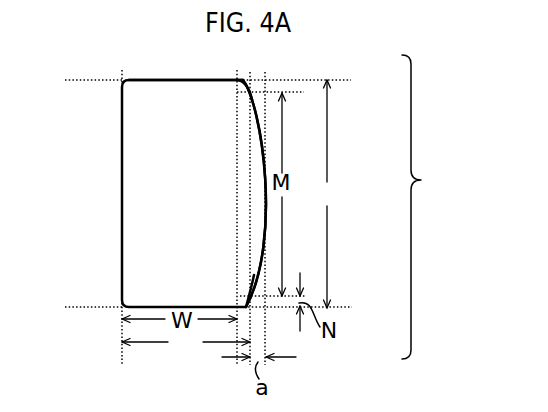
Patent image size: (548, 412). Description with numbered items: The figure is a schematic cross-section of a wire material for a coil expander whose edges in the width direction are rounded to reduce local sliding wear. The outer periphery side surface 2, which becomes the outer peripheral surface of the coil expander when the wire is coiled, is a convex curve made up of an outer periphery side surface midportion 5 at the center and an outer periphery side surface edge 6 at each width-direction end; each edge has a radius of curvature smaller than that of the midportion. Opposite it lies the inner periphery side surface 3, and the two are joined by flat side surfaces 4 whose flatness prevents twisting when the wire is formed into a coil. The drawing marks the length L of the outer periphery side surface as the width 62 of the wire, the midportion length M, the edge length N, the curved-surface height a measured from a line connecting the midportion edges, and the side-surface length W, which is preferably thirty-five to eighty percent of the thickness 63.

The outer periphery side surface 2 is at (428, 207).
The inner periphery side surface 3 is at (122, 155).
The side surface 4 is at (137, 79).
The outer periphery side surface midportion 5 is at (262, 138).
The outer periphery side surface edge 6 is at (247, 82).
The width of the wire material 62 is at (348, 194).
The thickness of the wire material 63 is at (186, 341).